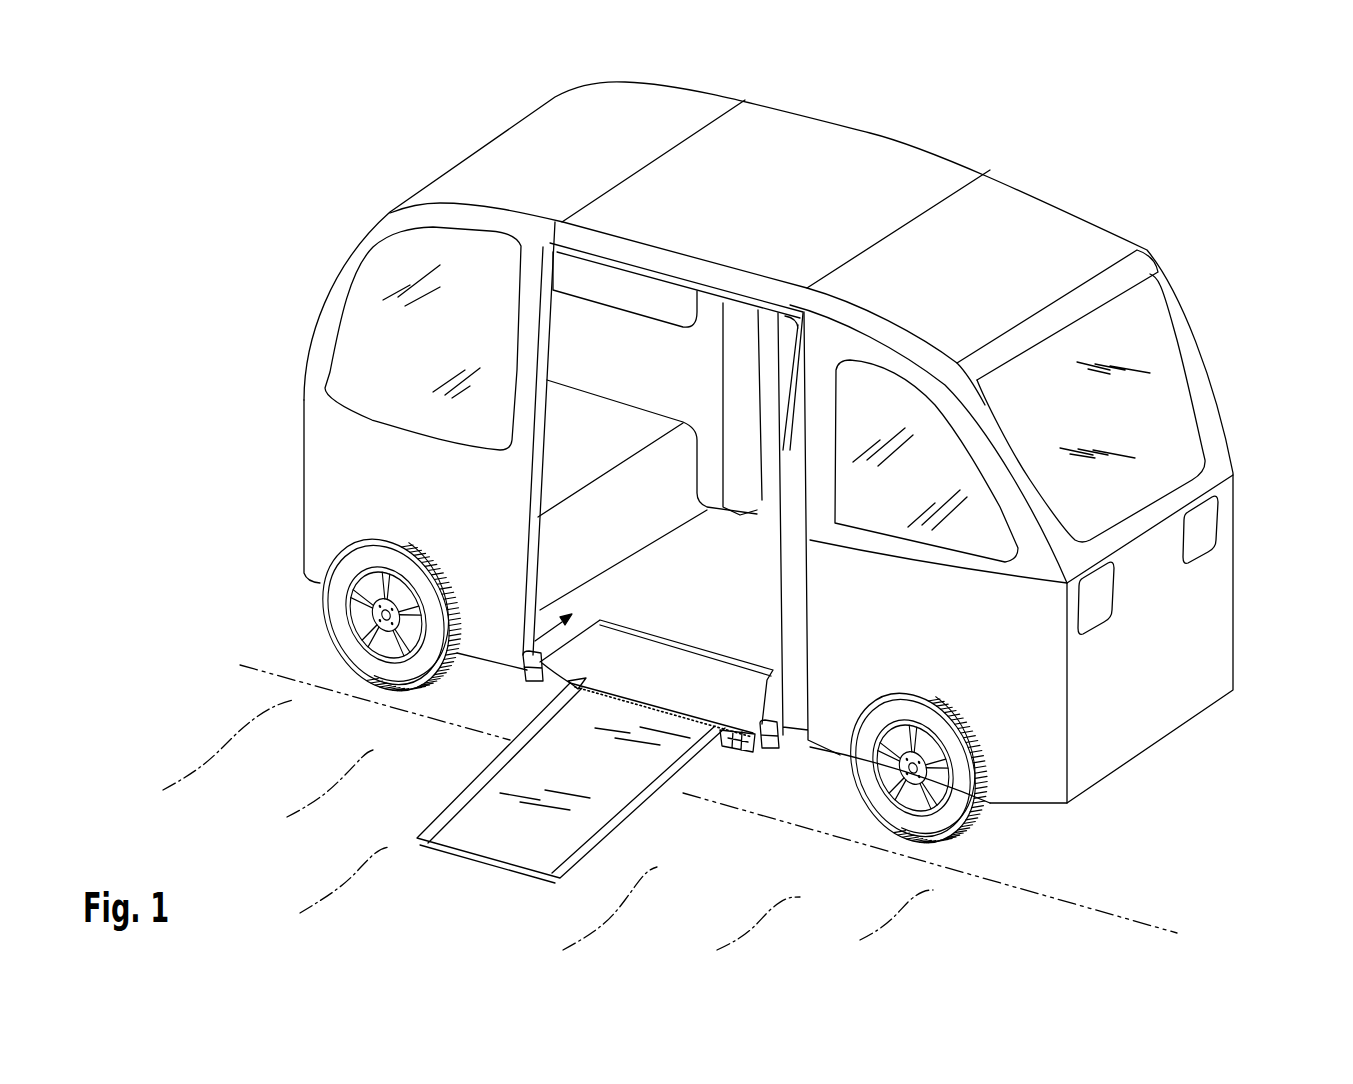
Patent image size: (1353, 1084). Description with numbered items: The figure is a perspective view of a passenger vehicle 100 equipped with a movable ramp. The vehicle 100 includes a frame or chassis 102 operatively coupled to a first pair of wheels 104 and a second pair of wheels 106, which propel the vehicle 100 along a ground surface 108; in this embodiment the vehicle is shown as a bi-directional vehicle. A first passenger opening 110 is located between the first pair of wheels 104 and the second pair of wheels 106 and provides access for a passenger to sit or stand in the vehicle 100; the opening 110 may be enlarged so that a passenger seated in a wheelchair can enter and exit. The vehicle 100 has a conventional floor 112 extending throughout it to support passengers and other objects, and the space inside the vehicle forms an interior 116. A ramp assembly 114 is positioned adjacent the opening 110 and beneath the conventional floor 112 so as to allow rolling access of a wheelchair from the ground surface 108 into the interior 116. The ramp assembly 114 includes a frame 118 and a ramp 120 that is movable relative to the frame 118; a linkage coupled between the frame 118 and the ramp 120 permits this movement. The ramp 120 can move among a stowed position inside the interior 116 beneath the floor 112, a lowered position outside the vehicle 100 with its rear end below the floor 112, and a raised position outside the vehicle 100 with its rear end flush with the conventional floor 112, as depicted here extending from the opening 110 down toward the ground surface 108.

The vehicle 100 is at (1216, 146).
The frame or chassis 102 is at (1195, 484).
The first pair of wheels 104 is at (950, 823).
The second pair of wheels 106 is at (333, 608).
The ground surface 108 is at (1122, 907).
The first passenger opening 110 is at (522, 657).
The conventional floor 112 is at (707, 590).
The ramp assembly 114 is at (718, 782).
The interior 116 is at (650, 363).
The frame 118 is at (752, 752).
The ramp 120 is at (520, 820).